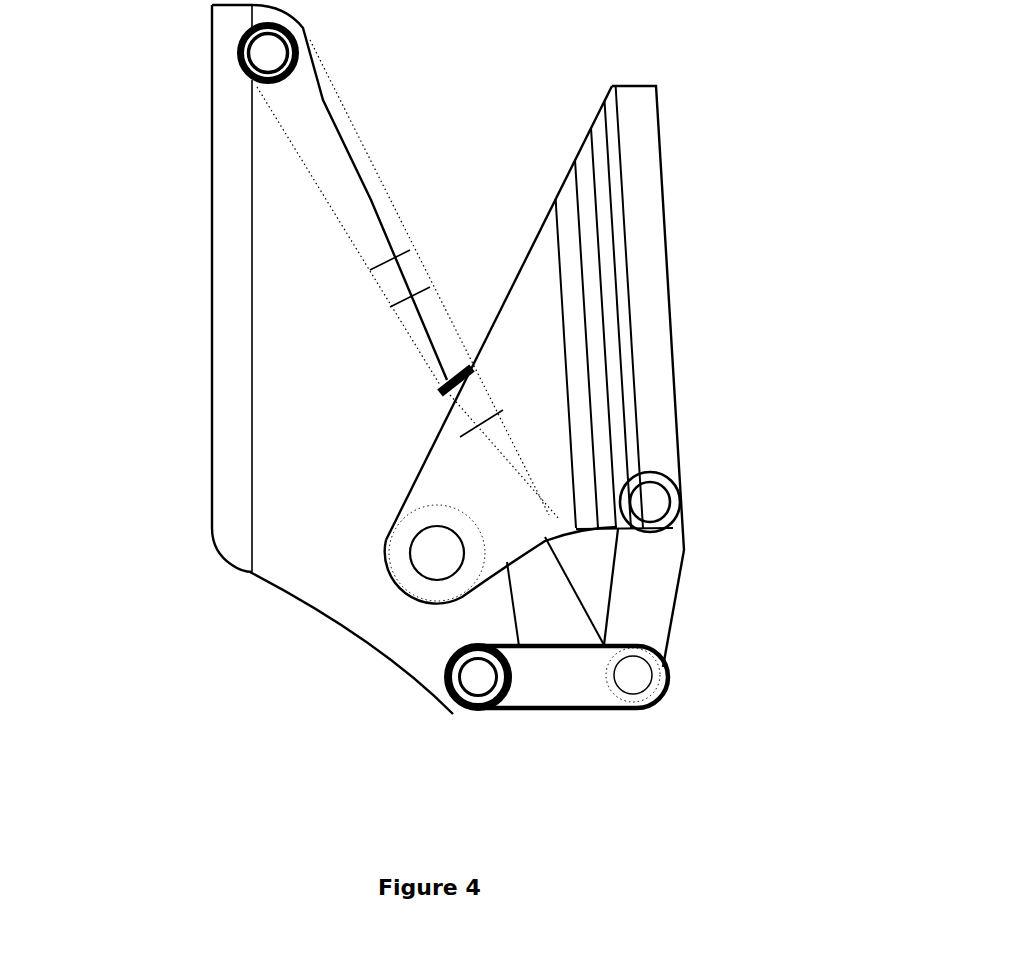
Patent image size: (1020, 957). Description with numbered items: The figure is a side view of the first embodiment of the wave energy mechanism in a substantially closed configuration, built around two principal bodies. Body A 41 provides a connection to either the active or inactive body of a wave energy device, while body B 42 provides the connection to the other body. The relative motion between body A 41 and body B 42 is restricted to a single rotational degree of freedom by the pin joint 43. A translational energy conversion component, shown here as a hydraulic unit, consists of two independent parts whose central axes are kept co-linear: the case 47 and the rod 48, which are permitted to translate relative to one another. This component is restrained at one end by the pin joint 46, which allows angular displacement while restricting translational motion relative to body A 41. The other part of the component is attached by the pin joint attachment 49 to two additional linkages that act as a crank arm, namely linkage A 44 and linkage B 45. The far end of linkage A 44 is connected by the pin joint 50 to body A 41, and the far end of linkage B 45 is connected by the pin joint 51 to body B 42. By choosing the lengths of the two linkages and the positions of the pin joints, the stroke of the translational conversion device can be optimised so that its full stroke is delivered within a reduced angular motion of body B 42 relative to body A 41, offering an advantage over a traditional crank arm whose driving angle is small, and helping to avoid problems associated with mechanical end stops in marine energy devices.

The body A 41 is at (310, 297).
The body B 42 is at (547, 335).
The pin joint 43 is at (437, 553).
The linkage A 44 is at (565, 687).
The linkage B 45 is at (653, 602).
The pin joint 46 is at (268, 52).
The case 47 is at (450, 315).
The rod 48 is at (563, 566).
The pin joint attachment 49 is at (640, 685).
The pin joint 50 is at (478, 677).
The pin joint 51 is at (650, 502).